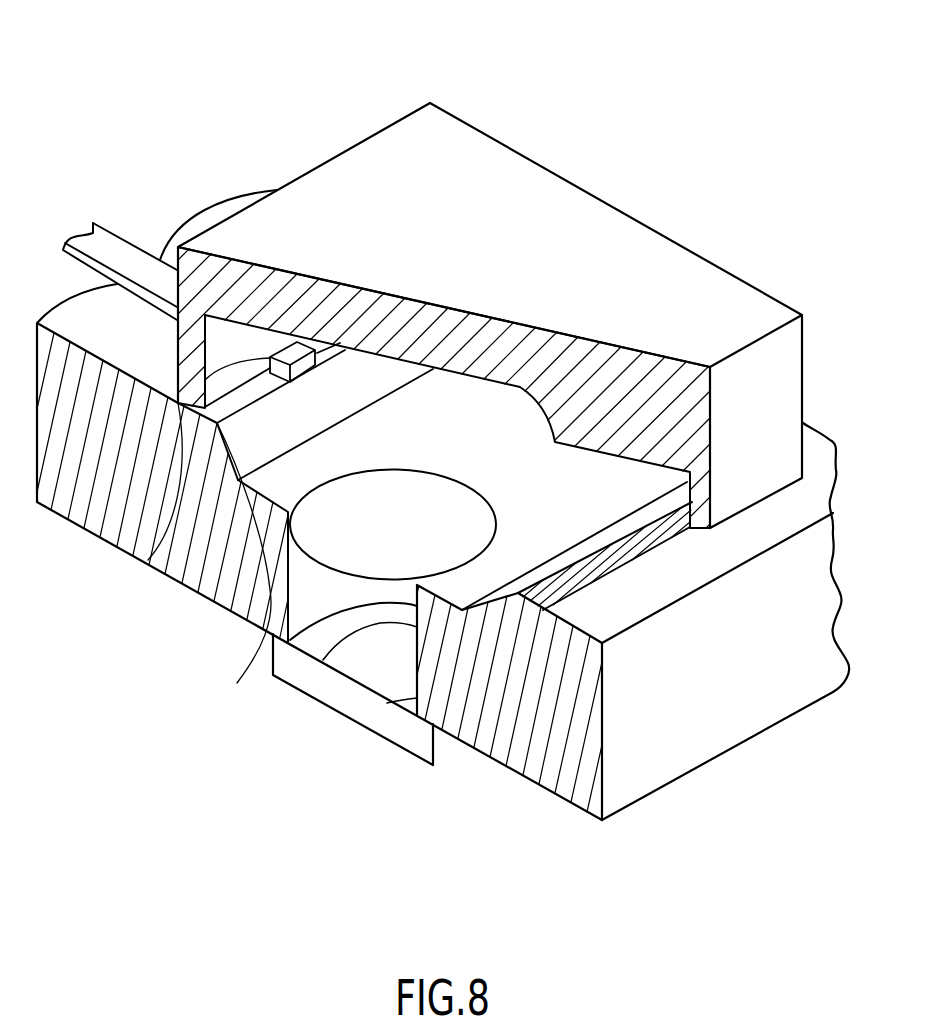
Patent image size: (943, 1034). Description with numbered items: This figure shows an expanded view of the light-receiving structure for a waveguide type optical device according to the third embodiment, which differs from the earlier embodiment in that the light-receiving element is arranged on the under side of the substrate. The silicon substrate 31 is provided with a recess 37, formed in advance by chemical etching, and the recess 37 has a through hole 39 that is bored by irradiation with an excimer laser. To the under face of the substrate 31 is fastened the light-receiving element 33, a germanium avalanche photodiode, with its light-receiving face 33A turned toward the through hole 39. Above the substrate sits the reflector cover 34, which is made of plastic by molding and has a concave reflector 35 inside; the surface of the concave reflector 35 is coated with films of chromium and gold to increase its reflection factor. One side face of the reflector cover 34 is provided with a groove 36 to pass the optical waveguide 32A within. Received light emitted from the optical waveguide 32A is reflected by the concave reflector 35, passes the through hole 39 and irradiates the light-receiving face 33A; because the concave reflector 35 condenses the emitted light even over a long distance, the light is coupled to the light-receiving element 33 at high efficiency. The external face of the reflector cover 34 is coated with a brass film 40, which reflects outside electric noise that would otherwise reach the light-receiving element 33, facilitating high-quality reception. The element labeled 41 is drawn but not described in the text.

The silicon substrate 31 is at (490, 718).
The optical waveguide 32A is at (270, 375).
The light-receiving element 33 is at (365, 707).
The light-receiving face 33A is at (367, 675).
The reflector cover 34 is at (542, 188).
The concave reflector 35 is at (520, 392).
The groove 36 is at (148, 560).
The recess 37 is at (237, 683).
The through hole 39 is at (378, 522).
The brass film 40 is at (385, 160).
The rail 41 is at (627, 560).